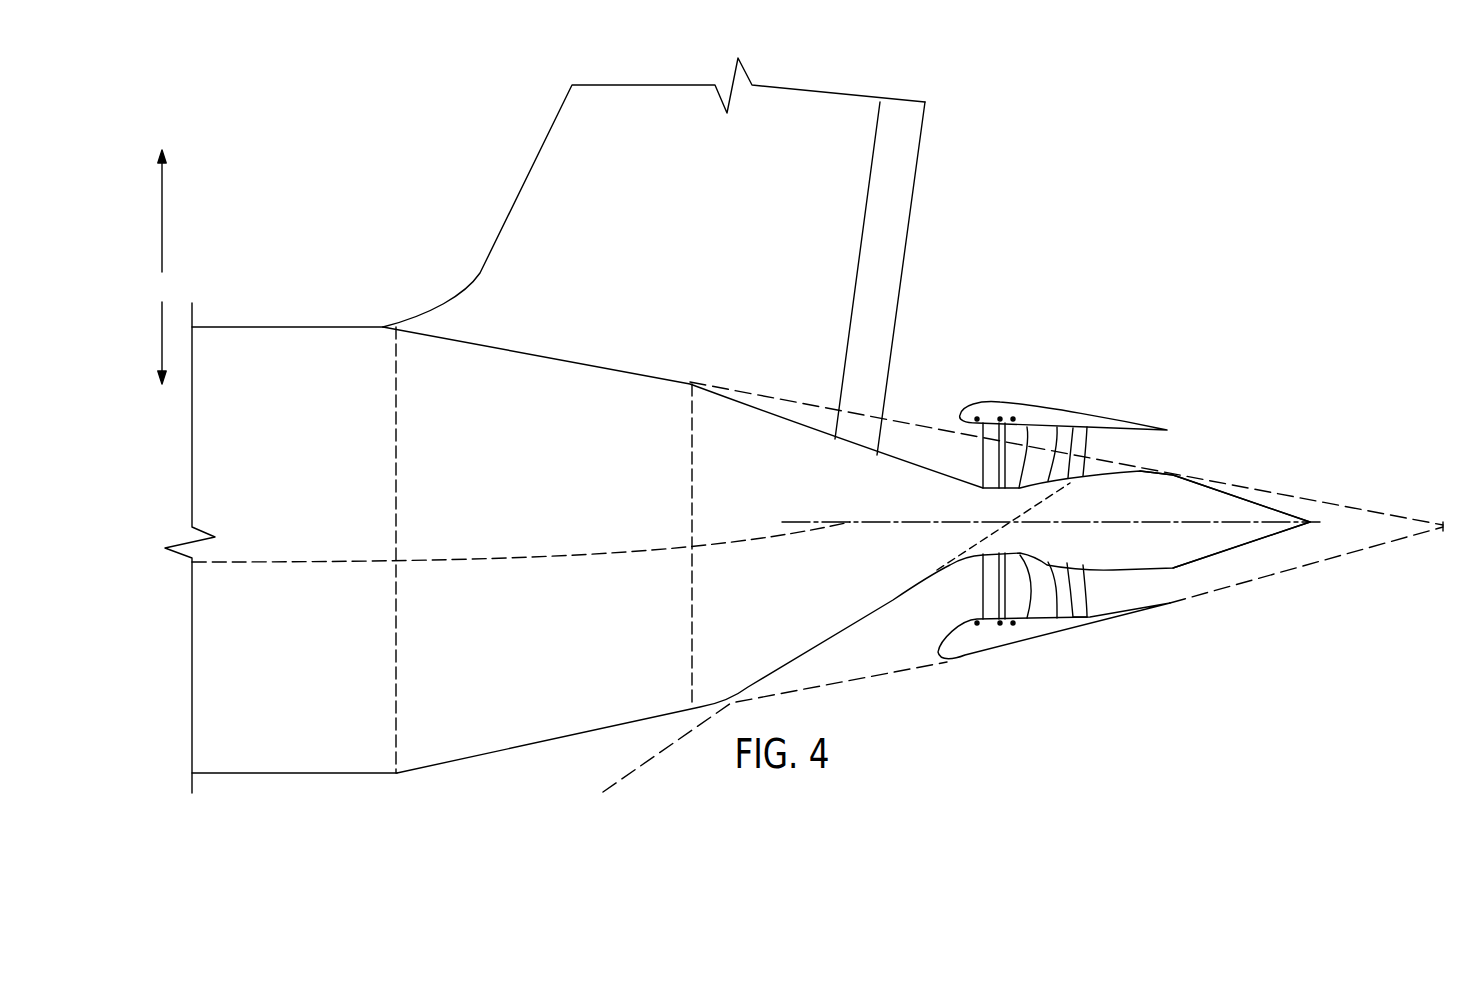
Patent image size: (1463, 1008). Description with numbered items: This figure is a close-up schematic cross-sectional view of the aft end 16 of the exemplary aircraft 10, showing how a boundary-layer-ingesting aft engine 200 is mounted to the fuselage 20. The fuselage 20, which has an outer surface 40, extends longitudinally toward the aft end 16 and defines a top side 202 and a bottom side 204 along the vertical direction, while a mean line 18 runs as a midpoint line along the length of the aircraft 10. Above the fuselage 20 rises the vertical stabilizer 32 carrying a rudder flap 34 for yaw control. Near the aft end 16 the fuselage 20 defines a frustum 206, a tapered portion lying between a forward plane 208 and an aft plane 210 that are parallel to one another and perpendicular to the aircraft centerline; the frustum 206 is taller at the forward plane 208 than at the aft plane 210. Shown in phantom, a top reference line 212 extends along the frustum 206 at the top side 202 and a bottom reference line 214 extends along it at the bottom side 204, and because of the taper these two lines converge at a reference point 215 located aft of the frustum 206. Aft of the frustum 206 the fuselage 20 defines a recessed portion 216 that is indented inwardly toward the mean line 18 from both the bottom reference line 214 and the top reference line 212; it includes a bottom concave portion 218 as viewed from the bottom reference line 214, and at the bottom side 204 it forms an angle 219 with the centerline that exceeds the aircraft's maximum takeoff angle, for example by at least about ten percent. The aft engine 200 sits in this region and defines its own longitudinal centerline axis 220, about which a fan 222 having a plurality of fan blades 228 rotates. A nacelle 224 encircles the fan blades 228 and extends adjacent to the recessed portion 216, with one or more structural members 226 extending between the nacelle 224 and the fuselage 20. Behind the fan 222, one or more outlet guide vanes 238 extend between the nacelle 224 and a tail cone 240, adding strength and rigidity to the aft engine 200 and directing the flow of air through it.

The aircraft 10 is at (327, 146).
The aft end 16 is at (1328, 538).
The mean line 18 is at (232, 560).
The fuselage 20 is at (288, 360).
The vertical stabilizer 32 is at (563, 152).
The rudder flap 34 is at (900, 170).
The outer surface 40 is at (238, 325).
The aft engine 200 is at (1197, 410).
The top side 202 is at (373, 298).
The bottom side 204 is at (367, 787).
The frustum 206 is at (568, 713).
The forward plane 208 is at (393, 663).
The aft plane 210 is at (692, 487).
The top reference line 212 is at (820, 407).
The bottom reference line 214 is at (828, 688).
The reference point 215 is at (1443, 528).
The recessed portion 216 is at (895, 440).
The bottom concave portion 218 is at (873, 648).
The angle 219 is at (1050, 521).
The longitudinal centerline axis 220 is at (1202, 522).
The fan 222 is at (1038, 437).
The nacelle 224 is at (1047, 397).
The structural members 226 is at (991, 433).
The fan blades 228 is at (1052, 443).
The outlet guide vanes 238 is at (1077, 578).
The tail cone 240 is at (1200, 483).